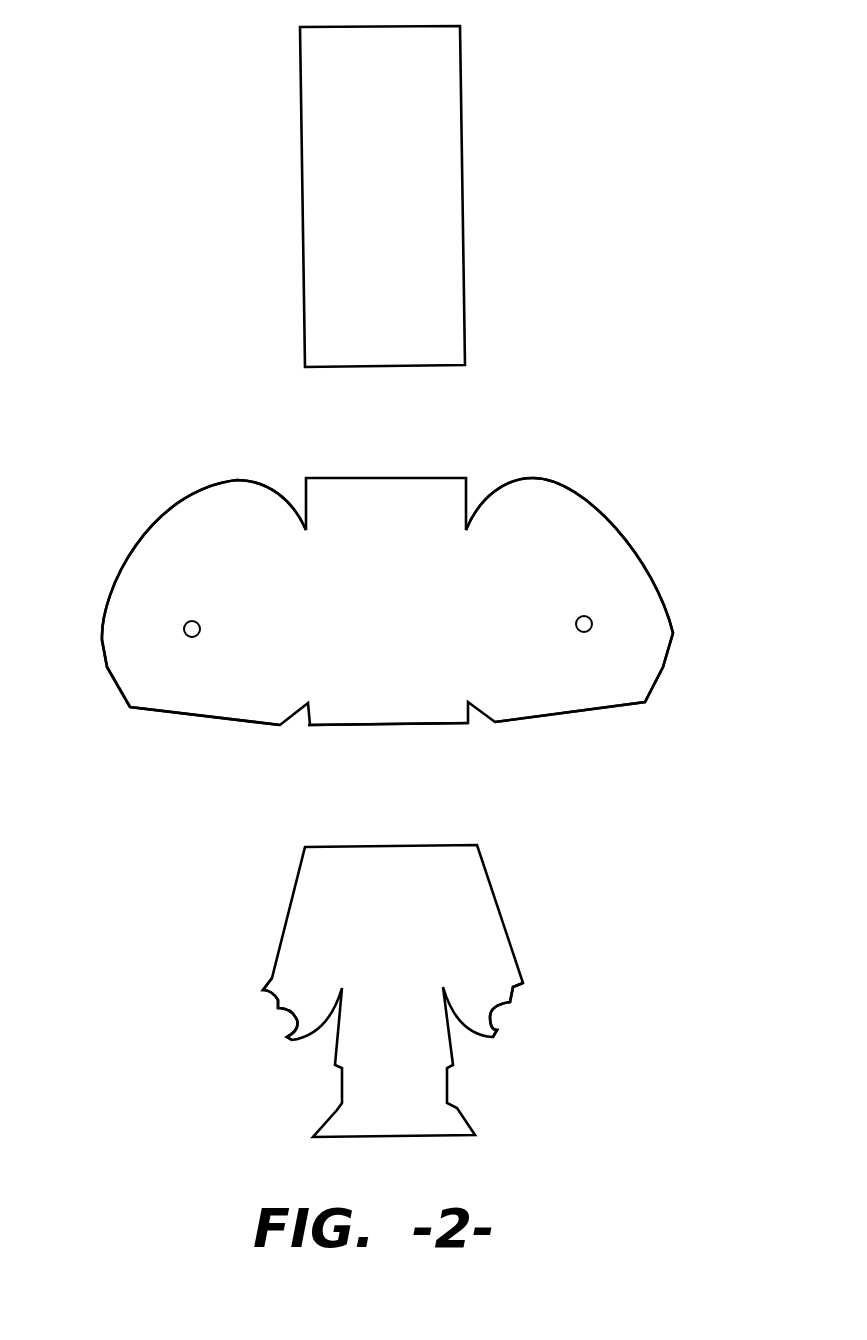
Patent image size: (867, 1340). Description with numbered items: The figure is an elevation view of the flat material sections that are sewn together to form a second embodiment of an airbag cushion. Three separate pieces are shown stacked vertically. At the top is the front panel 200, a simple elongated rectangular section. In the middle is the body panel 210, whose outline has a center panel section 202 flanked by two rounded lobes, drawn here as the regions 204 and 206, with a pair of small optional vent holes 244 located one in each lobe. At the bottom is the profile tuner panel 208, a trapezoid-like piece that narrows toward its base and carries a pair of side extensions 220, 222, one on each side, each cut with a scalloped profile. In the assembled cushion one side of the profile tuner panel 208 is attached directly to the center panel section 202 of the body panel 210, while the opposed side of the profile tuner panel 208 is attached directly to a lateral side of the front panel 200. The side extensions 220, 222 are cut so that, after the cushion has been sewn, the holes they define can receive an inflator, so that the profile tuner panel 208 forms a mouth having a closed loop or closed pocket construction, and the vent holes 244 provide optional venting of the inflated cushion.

The front panel 200 is at (438, 113).
The center panel section 202 is at (418, 497).
The right lobe 204 is at (582, 522).
The left lobe 206 is at (197, 517).
The profile tuner panel 208 is at (470, 902).
The body panel 210 is at (415, 727).
The side extension 220 is at (270, 980).
The side extension 222 is at (492, 1038).
The vent holes 244 is at (185, 620).